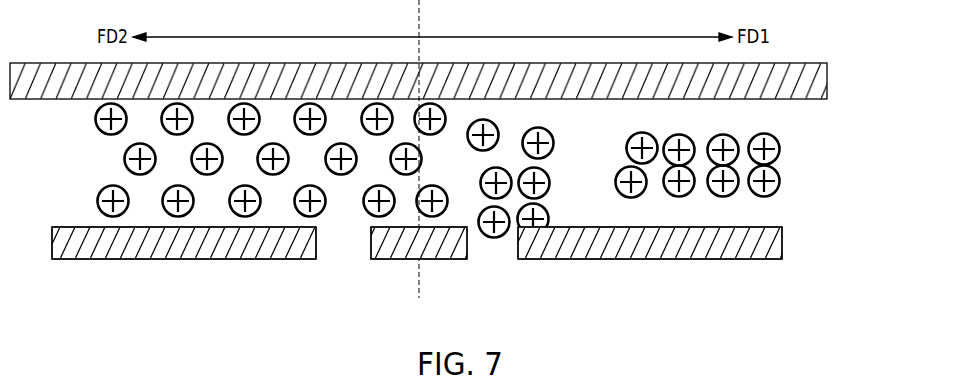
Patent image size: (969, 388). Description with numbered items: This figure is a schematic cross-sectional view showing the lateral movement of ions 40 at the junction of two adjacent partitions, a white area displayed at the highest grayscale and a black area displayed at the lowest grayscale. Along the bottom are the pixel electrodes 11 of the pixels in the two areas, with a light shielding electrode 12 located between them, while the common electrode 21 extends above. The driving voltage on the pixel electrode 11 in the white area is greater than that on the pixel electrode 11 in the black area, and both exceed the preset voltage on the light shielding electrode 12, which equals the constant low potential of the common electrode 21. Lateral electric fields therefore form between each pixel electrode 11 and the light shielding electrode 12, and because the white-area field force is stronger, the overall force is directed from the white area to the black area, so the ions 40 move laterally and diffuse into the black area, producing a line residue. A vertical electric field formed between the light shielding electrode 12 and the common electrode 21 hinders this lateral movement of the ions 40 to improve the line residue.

The pixel electrode 11 is at (197, 243).
The light shielding electrode 12 is at (437, 243).
The common electrode 21 is at (777, 84).
The ions 40 is at (779, 146).